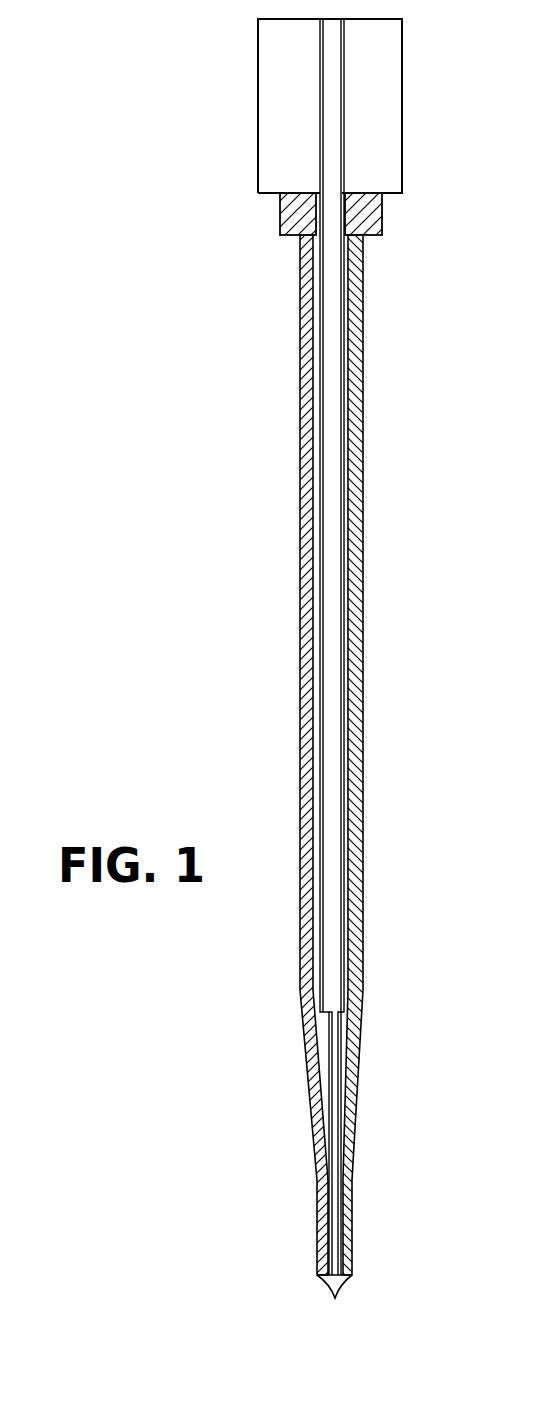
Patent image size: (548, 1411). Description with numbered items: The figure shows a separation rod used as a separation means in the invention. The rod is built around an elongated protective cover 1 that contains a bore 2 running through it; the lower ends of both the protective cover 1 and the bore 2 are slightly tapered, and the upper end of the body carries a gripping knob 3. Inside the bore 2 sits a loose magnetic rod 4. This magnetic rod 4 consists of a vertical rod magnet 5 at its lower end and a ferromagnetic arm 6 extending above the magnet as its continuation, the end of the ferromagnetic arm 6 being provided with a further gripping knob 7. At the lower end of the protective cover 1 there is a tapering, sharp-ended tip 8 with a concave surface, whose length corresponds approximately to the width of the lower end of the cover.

The protective cover 1 is at (385, 692).
The bore 2 is at (308, 558).
The gripping knob 3 is at (283, 233).
The magnetic rod 4 is at (368, 534).
The rod magnet 5 is at (325, 1209).
The ferromagnetic arm 6 is at (343, 612).
The gripping knob 7 is at (287, 125).
The tip 8 is at (335, 1299).